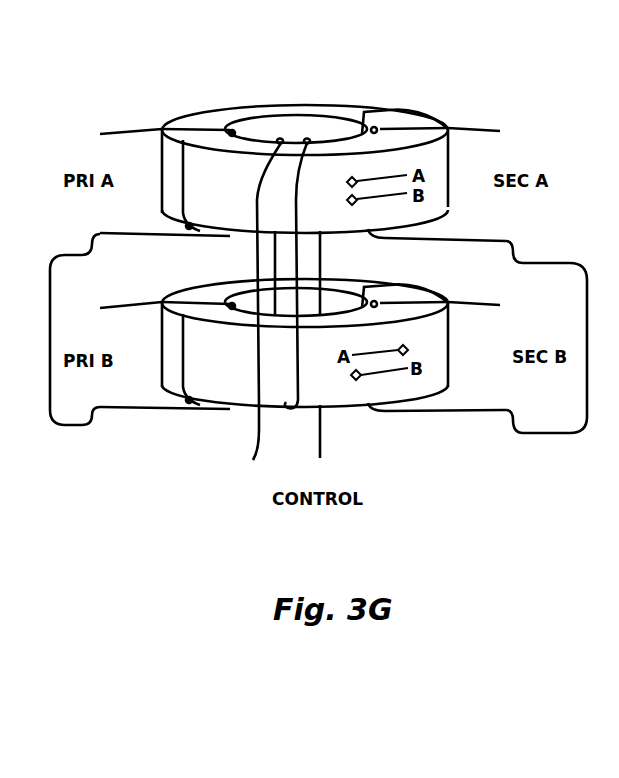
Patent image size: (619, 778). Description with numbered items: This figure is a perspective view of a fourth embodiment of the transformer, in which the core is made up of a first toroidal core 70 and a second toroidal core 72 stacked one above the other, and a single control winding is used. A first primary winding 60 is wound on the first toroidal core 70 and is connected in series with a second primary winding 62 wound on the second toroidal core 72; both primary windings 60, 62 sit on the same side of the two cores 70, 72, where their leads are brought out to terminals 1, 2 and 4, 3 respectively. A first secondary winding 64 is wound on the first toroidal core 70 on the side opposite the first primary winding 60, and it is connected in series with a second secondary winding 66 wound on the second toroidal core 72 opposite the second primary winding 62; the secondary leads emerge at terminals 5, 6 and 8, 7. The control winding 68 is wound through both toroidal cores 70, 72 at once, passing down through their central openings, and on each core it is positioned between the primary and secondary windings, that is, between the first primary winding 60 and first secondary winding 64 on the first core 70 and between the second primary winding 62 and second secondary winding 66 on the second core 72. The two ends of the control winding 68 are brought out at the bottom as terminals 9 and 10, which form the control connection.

The primary A winding terminal 1 is at (122, 135).
The primary A winding terminal 2 is at (155, 234).
The primary B winding terminal 3 is at (155, 406).
The primary B winding terminal 4 is at (122, 306).
The secondary A winding terminal 5 is at (488, 135).
The secondary A winding terminal 6 is at (455, 243).
The secondary B winding terminal 7 is at (456, 406).
The secondary B winding terminal 8 is at (488, 305).
The control winding terminal 9 is at (251, 443).
The control winding terminal 10 is at (321, 443).
The first primary winding 60 is at (118, 128).
The second primary winding 62 is at (145, 410).
The first secondary winding 64 is at (468, 128).
The second secondary winding 66 is at (477, 410).
The control winding 68 is at (320, 442).
The first toroidal core 70 is at (303, 108).
The second toroidal core 72 is at (450, 330).